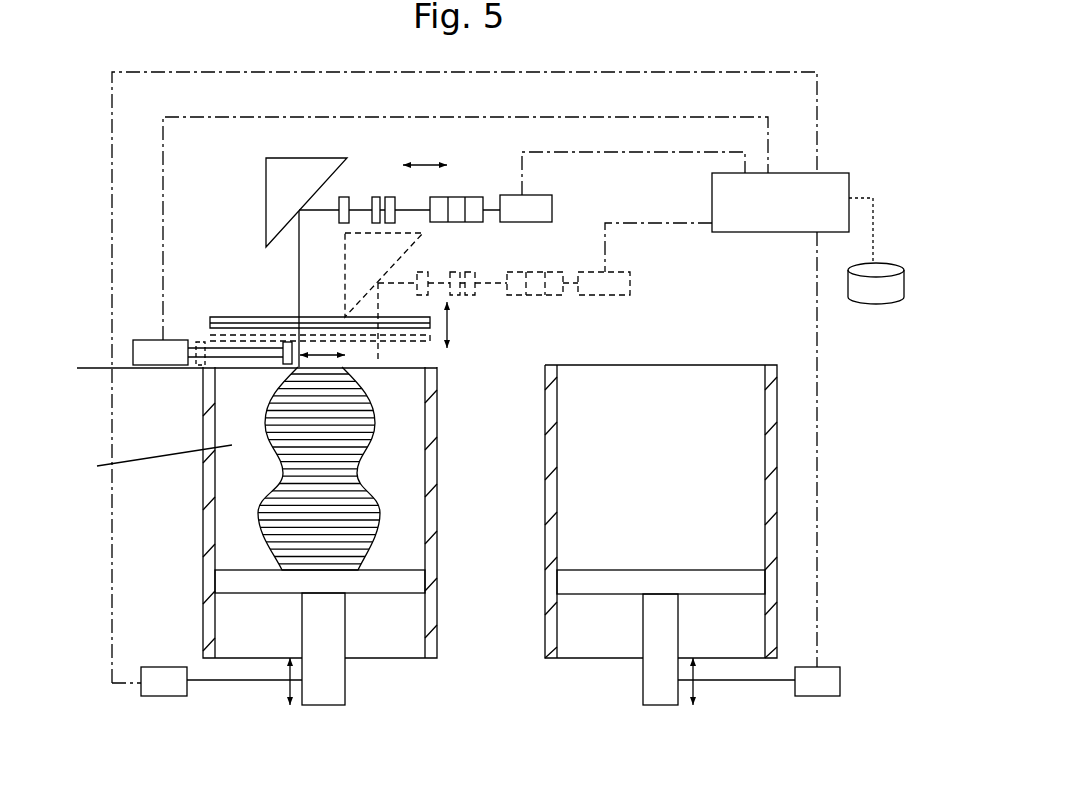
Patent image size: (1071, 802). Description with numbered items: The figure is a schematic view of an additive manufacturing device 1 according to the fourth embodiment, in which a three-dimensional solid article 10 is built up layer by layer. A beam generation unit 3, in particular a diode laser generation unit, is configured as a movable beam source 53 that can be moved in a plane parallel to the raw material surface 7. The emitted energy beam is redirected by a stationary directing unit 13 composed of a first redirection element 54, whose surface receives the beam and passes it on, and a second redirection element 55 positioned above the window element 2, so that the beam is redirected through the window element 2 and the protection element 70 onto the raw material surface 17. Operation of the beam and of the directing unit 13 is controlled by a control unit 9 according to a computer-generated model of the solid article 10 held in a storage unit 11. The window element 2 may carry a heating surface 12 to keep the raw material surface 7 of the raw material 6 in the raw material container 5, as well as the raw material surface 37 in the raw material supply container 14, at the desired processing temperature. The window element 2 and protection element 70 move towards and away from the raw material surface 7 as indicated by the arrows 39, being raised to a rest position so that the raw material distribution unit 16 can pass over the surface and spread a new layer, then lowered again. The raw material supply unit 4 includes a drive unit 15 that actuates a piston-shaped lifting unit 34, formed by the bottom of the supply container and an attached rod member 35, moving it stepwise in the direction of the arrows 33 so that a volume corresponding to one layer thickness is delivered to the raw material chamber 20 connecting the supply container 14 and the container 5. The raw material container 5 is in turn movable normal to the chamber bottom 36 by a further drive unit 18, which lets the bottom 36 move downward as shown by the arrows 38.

The additive manufacturing device 1 is at (800, 133).
The window element 2 is at (320, 322).
The beam generation unit 3 is at (569, 197).
The movable beam source 53 is at (530, 210).
The raw material supply unit 4 is at (447, 544).
The raw material container 5 is at (212, 525).
The raw material 6 is at (833, 412).
The raw material surface 7 is at (243, 363).
The control unit 9 is at (763, 217).
The solid article 10 is at (322, 508).
The storage unit 11 is at (873, 288).
The heating surface 12 is at (248, 294).
The directing unit 13 is at (282, 183).
The raw material supply container 14 is at (765, 498).
The drive unit 15 is at (807, 687).
The raw material distribution unit 16 is at (162, 350).
The raw material surface 17 is at (395, 365).
The drive unit 18 is at (162, 678).
The raw material chamber 20 is at (313, 375).
The arrows 33 is at (695, 682).
The piston-shaped lifting unit 34 is at (660, 625).
The rod member 35 is at (655, 653).
The chamber bottom 36 is at (390, 572).
The raw material surface 37 is at (719, 519).
The arrows 38 is at (288, 685).
The arrows 39 is at (447, 327).
The first redirection element 54 is at (472, 200).
The second redirection element 55 is at (282, 210).
The protection element 70 is at (230, 317).